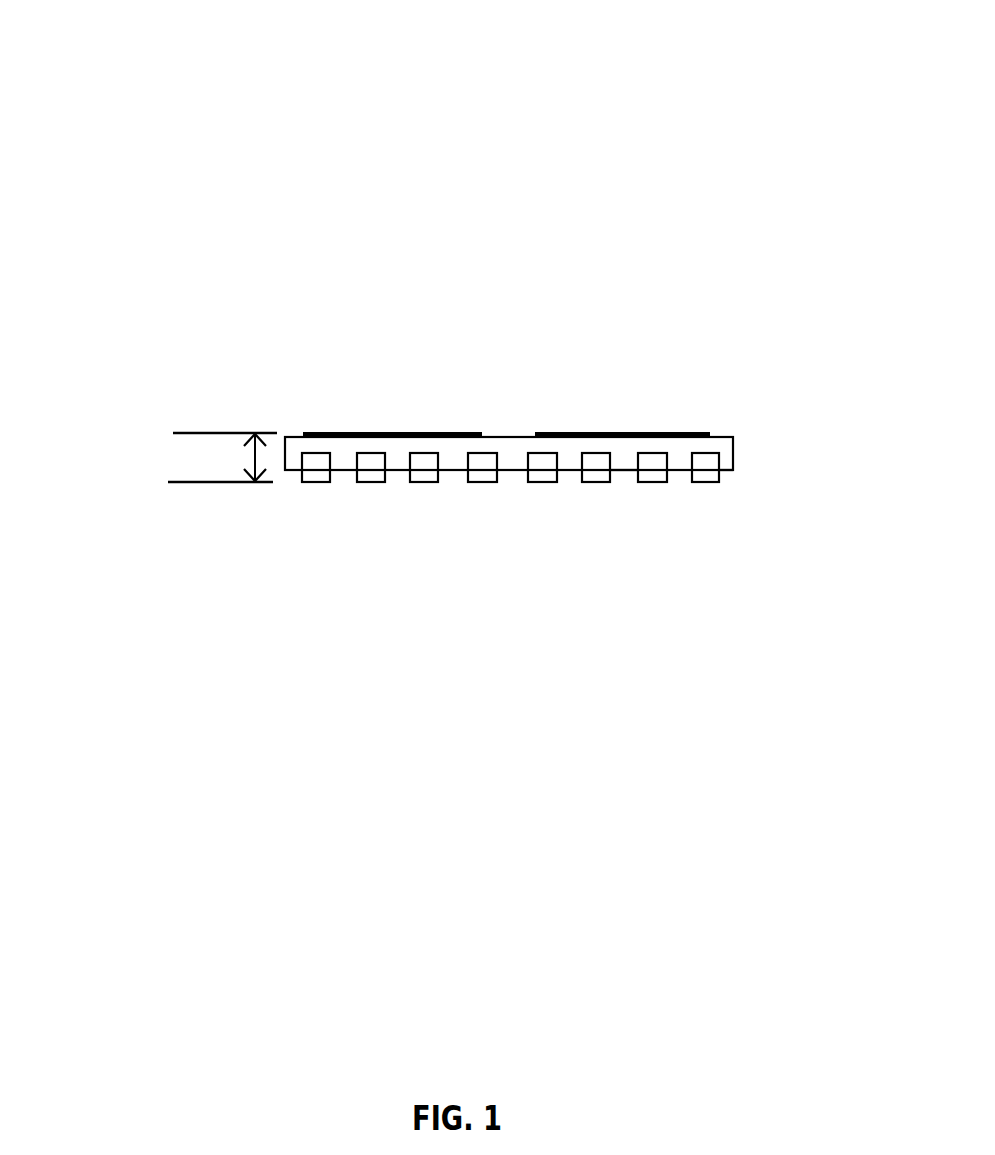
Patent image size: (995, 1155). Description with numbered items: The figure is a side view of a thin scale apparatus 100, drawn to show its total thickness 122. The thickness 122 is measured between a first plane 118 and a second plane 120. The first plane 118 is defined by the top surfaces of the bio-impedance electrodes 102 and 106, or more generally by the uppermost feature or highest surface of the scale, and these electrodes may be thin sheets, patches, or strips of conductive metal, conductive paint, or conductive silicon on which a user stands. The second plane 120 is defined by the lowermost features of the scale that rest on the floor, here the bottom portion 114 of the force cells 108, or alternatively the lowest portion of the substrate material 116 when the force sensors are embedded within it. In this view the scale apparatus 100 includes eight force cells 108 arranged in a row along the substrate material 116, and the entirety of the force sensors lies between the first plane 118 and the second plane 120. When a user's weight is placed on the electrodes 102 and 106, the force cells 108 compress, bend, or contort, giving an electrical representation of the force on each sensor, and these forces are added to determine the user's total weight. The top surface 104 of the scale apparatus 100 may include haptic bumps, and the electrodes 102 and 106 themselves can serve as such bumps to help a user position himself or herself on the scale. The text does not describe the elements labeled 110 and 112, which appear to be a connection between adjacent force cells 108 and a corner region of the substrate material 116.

The thin scale apparatus 100 is at (170, 67).
The bio-impedance electrode 102 is at (358, 433).
The top surface 104 is at (512, 433).
The bio-impedance electrode 106 is at (637, 432).
The force cells 108 is at (545, 487).
The conductor 110 is at (627, 470).
The substrate corner 112 is at (707, 455).
The bottom portion 114 is at (703, 485).
The substrate material 116 is at (292, 433).
The first plane 118 is at (217, 432).
The second plane 120 is at (212, 483).
The total thickness 122 is at (253, 460).